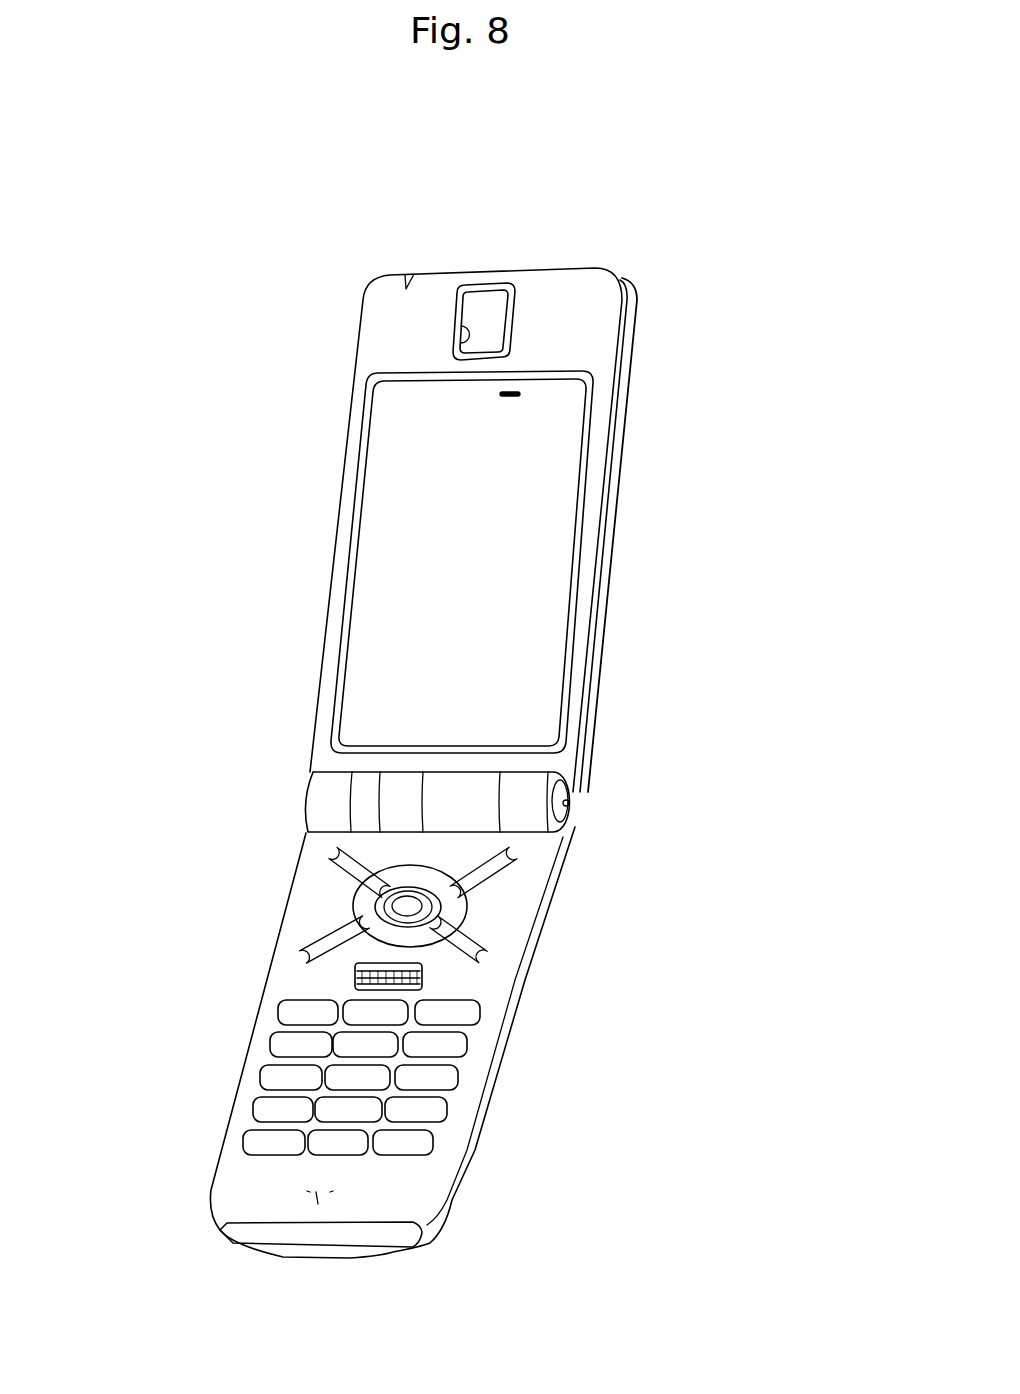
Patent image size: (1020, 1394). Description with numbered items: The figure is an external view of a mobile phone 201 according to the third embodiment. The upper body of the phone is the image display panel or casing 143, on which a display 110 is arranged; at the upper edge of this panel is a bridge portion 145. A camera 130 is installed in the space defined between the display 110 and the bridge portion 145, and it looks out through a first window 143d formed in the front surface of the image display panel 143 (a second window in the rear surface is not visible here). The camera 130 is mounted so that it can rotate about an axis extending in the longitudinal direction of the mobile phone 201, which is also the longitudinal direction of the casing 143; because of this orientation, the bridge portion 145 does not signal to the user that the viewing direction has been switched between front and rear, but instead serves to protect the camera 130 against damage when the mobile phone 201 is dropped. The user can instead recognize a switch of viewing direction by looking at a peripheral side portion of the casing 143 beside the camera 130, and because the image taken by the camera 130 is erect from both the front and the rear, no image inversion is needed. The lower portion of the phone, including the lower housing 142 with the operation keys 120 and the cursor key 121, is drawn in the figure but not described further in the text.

The mobile phone 201 is at (567, 182).
The display 110 is at (360, 675).
The operation keys 120 is at (452, 1042).
The cursor key 121 is at (460, 947).
The camera 130 is at (490, 320).
The operation unit housing 142 is at (276, 937).
The image display panel 143 is at (346, 478).
The first window 143d is at (458, 348).
The bridge portion 145 is at (482, 279).